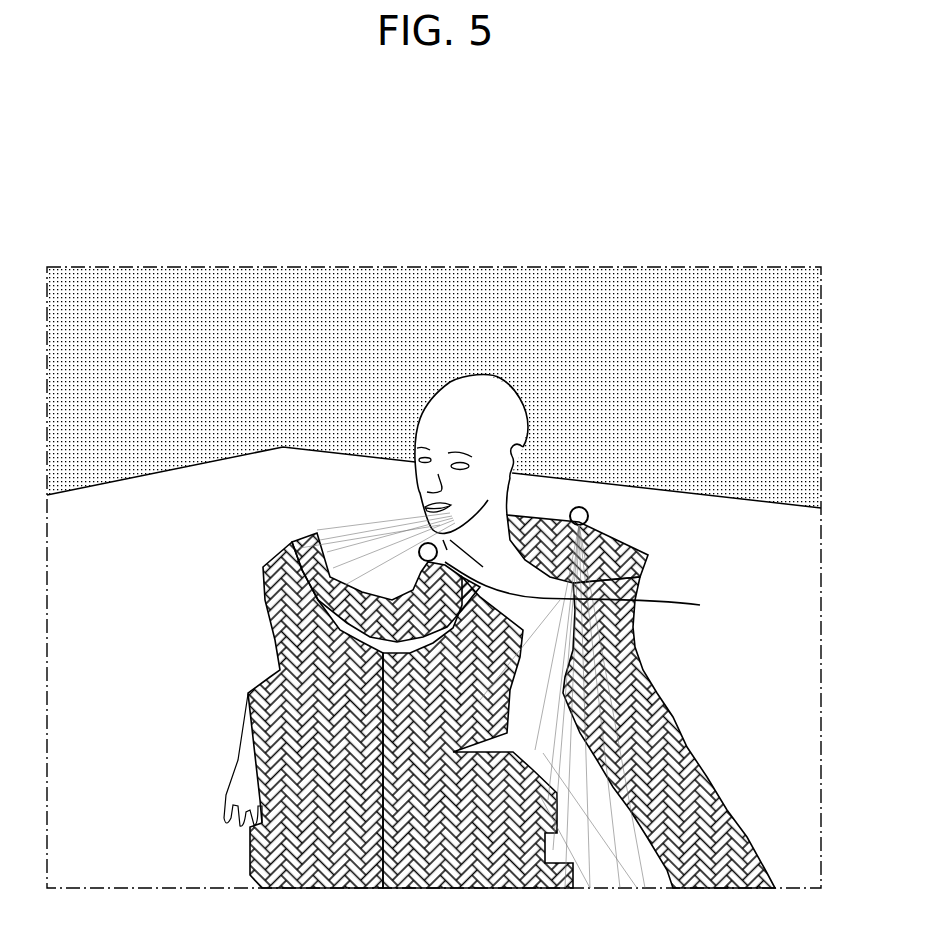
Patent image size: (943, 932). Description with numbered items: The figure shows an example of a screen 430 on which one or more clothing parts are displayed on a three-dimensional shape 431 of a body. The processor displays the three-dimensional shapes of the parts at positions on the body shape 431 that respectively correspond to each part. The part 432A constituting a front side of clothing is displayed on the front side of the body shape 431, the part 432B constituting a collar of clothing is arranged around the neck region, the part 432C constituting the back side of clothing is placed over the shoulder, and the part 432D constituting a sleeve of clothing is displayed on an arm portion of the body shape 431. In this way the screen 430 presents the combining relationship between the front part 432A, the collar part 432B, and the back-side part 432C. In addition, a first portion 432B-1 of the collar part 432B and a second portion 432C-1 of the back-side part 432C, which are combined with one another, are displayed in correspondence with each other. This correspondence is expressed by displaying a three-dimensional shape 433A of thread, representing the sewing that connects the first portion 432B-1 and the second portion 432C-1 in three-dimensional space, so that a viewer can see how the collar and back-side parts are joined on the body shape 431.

The screen 430 is at (753, 230).
The 3D shape of a body 431 is at (479, 388).
The part constituting a front side of clothing 432A is at (270, 595).
The part constituting a collar of clothing 432B is at (313, 537).
The first portion of the collar part 432B-1 is at (425, 541).
The part constituting a back side of clothing 432C is at (622, 545).
The second portion of the back-side part 432C-1 is at (580, 507).
The part constituting a sleeve of clothing 432D is at (663, 723).
The 3D shape of thread 433A is at (602, 589).